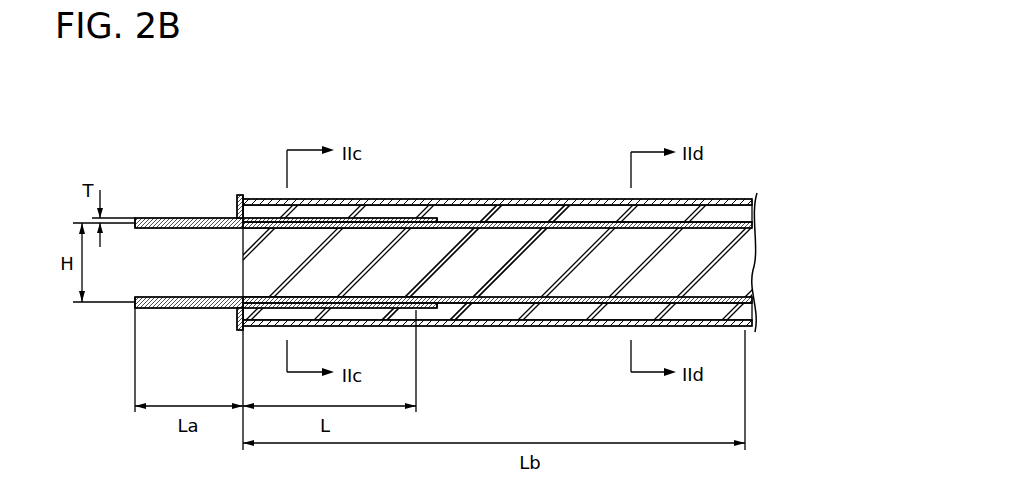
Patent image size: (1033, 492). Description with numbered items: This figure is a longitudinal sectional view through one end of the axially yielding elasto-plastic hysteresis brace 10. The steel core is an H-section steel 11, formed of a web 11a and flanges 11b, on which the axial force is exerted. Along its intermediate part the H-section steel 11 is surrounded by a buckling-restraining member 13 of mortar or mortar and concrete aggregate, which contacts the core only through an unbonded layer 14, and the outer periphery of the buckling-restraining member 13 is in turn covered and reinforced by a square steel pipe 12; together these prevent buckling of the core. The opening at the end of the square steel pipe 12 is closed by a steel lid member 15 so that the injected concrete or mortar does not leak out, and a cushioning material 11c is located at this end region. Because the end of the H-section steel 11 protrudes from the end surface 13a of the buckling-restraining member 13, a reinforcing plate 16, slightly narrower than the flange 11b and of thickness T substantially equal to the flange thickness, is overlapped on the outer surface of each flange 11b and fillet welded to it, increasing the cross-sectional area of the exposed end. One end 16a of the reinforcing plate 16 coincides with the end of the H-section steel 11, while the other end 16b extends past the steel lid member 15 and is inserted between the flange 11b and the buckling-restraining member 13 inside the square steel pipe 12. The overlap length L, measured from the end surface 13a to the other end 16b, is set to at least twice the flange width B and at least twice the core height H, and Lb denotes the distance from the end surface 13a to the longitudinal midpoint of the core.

The axially yielding elasto-plastic hysteresis brace 10 is at (511, 178).
The H-section steel 11 is at (471, 212).
The web 11a is at (481, 283).
The flange 11b is at (455, 222).
The cushioning material 11c is at (424, 218).
The square steel pipe 12 is at (583, 200).
The buckling-restraining member 13 is at (548, 214).
The end surface of the buckling-restraining member 13a is at (236, 212).
The unbonded layer 14 is at (710, 222).
The steel lid member 15 is at (240, 196).
The reinforcing plate 16 is at (165, 217).
The one end of the reinforcing plate 16a is at (135, 308).
The other end of the reinforcing plate 16b is at (421, 216).